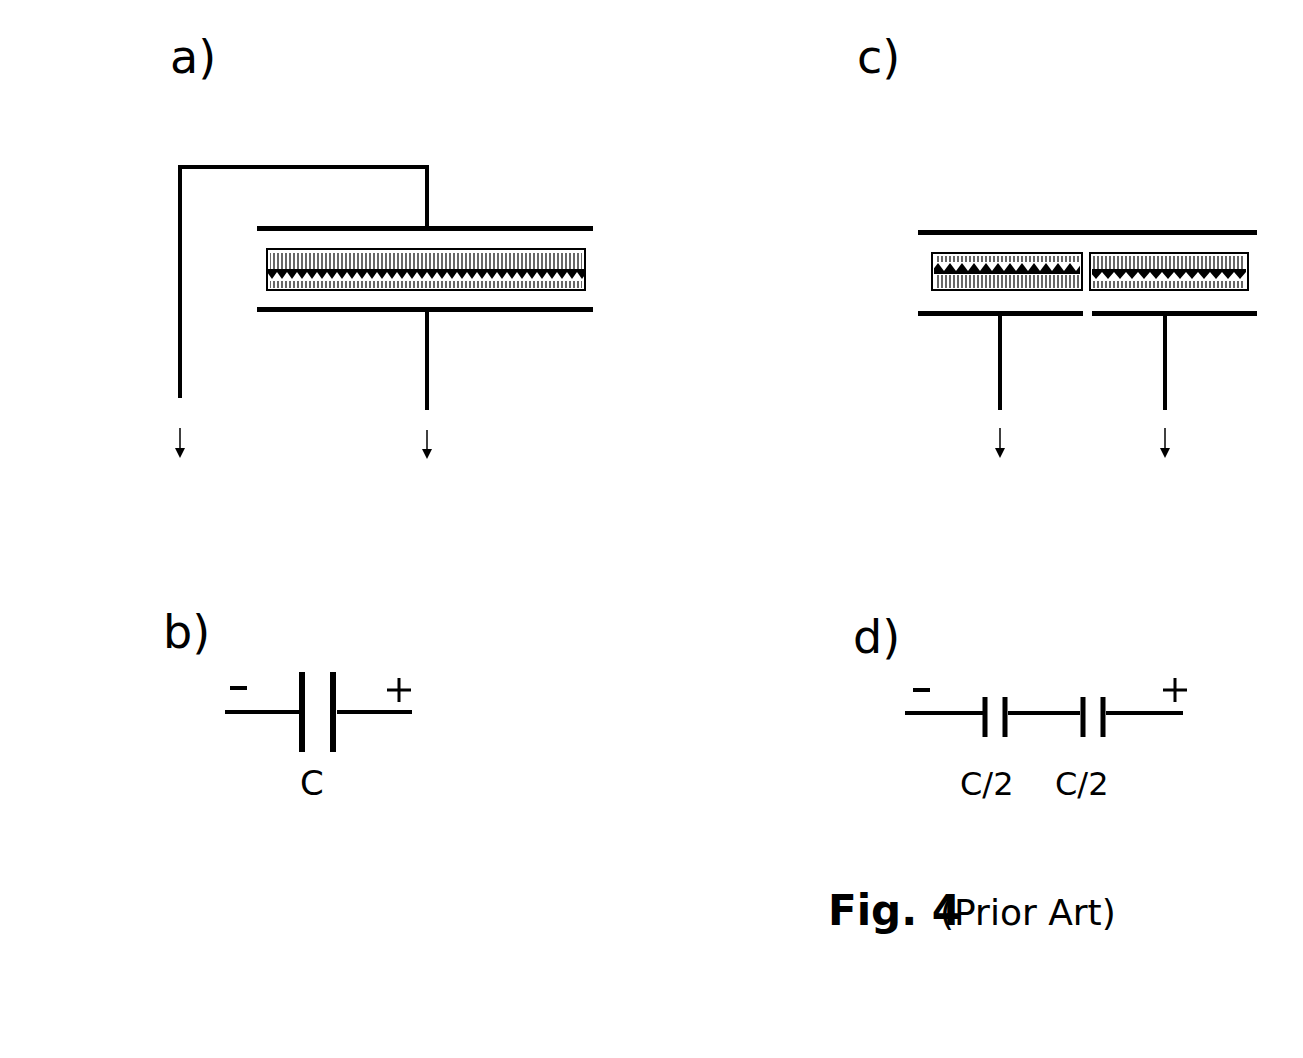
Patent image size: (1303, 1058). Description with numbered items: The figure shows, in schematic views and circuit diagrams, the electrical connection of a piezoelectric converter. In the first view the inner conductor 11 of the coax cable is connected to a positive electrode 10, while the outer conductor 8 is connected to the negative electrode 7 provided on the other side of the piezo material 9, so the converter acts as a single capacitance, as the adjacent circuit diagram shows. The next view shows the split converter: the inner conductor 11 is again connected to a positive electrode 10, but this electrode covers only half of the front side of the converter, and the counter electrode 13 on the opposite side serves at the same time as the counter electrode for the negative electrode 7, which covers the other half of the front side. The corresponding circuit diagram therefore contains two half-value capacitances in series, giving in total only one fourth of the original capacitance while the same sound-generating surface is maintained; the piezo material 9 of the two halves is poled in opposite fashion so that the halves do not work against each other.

In FIG. 4a, the negative electrode 7 is at (523, 227).
In FIG. 4c, the negative electrode 7 is at (965, 318).
In FIG. 4a, the outer conductor 8 is at (296, 341).
In FIG. 4c, the outer conductor 8 is at (1019, 415).
In FIG. 4a, the piezo material 9 is at (320, 257).
In FIG. 4c, the piezo material 9 is at (1010, 250).
In FIG. 4a, the positive electrode 10 is at (550, 315).
In FIG. 4c, the positive electrode 10 is at (1230, 318).
In FIG. 4a, the inner conductor 11 is at (459, 412).
In FIG. 4c, the inner conductor 11 is at (1199, 414).
In FIG. 4c, the counter electrode 13 is at (1247, 230).